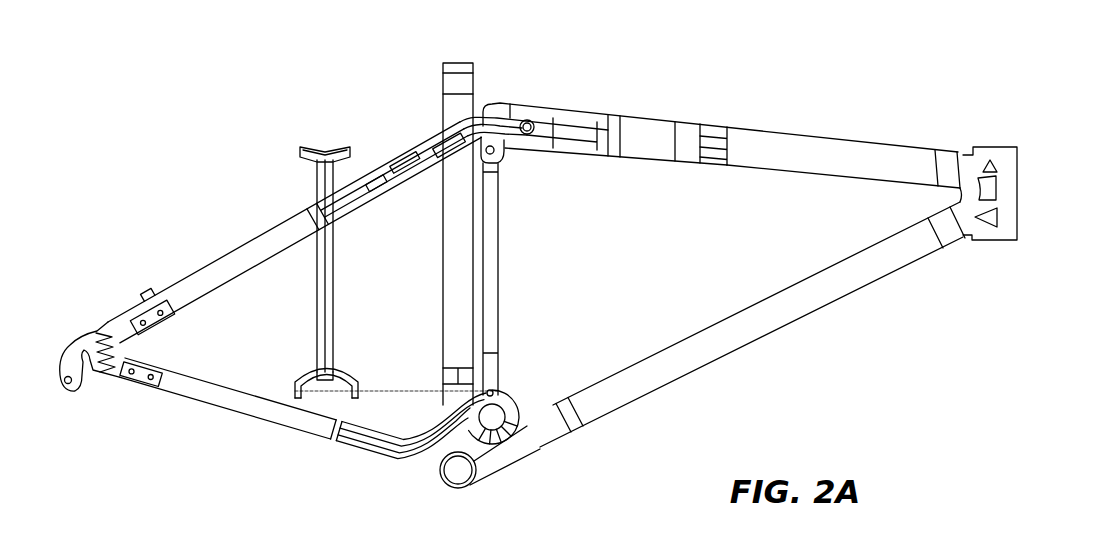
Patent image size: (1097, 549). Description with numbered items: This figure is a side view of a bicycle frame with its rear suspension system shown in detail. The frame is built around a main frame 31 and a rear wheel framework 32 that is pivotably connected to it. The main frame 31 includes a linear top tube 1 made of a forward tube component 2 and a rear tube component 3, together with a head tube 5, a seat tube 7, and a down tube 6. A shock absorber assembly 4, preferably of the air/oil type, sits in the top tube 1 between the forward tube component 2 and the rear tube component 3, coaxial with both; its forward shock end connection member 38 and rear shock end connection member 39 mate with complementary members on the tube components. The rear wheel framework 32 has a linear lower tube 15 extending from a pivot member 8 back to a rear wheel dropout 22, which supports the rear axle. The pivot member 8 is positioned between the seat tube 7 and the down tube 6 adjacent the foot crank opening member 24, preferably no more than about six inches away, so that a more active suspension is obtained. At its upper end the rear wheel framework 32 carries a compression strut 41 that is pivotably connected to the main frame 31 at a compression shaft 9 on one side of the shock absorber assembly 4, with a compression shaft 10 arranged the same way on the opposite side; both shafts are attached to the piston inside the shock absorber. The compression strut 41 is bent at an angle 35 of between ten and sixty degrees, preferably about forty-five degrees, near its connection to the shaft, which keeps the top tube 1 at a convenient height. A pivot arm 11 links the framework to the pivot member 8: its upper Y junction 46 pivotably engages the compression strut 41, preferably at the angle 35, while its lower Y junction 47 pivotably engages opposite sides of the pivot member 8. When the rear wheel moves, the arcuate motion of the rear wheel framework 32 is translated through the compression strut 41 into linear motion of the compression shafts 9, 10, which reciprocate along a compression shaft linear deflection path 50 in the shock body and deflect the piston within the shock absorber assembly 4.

The top tube 1 is at (788, 162).
The forward tube component 2 is at (843, 137).
The rear tube component 3 is at (497, 105).
The shock absorber assembly 4 is at (650, 117).
The head tube 5 is at (1018, 175).
The down tube 6 is at (620, 398).
The seat tube 7 is at (440, 100).
The pivot member 8 is at (497, 420).
The compression shaft 9 is at (530, 118).
The compression shaft 10 is at (565, 125).
The pivot arm 11 is at (333, 267).
The linear lower tube 15 is at (220, 407).
The rear wheel dropout 22 is at (58, 347).
The foot crank opening member 24 is at (455, 472).
The main frame 31 is at (793, 322).
The rear wheel framework 32 is at (227, 285).
The angle 35 is at (500, 153).
The forward shock end connection member 38 is at (717, 123).
The rear shock end connection member 39 is at (513, 108).
The compression strut 41 is at (437, 138).
The upper Y junction 46 is at (305, 163).
The lower Y junction 47 is at (348, 370).
The compression shaft linear deflection path 50 is at (557, 113).